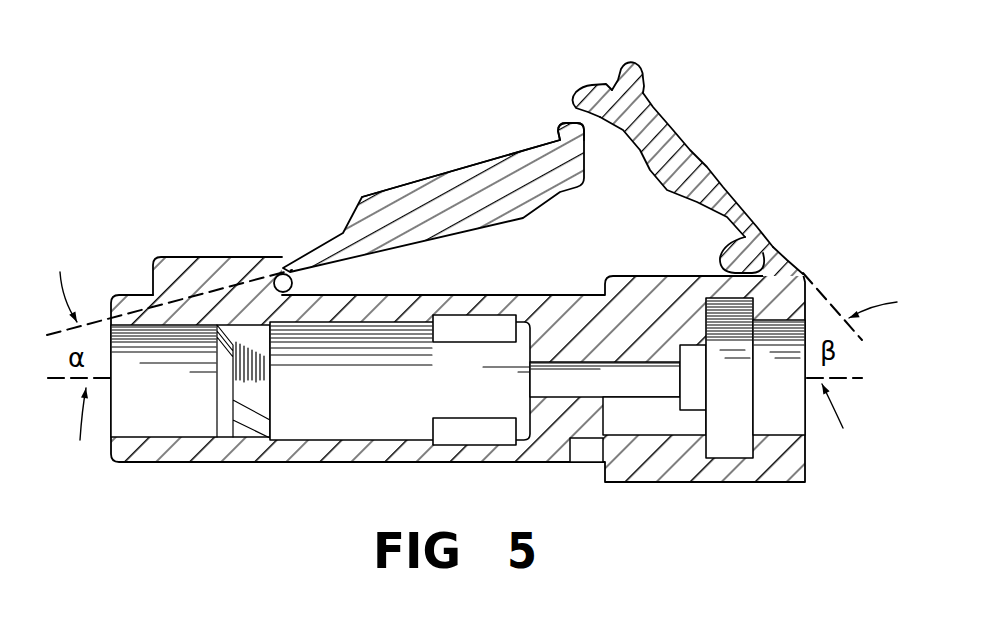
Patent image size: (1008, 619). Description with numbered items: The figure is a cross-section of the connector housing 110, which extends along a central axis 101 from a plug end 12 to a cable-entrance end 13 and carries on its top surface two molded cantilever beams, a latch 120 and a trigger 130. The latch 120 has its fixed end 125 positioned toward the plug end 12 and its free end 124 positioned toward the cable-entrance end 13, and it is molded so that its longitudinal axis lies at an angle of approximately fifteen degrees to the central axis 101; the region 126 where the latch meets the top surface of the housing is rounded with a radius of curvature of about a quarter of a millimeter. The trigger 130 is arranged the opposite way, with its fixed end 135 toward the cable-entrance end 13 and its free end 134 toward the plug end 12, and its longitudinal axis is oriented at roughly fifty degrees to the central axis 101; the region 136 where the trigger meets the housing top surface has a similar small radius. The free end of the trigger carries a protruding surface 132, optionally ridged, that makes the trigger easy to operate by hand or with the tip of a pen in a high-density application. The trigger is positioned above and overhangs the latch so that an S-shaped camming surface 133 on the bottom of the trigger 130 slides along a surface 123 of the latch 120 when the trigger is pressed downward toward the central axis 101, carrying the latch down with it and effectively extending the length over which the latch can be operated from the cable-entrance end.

The housing 110 is at (312, 130).
The plug end 12 is at (103, 448).
The cable-entrance end 13 is at (814, 447).
The central axis 101 is at (373, 383).
The latch 120 is at (425, 183).
The surface of the latch 123 is at (568, 122).
The free end of the latch 124 is at (528, 160).
The fixed end of the latch 125 is at (233, 262).
The region where the latch meets the top surface of the housing 126 is at (278, 272).
The trigger 130 is at (719, 147).
The protruding surface 132 is at (633, 67).
The camming surface 133 is at (604, 90).
The free end of the trigger 134 is at (668, 110).
The fixed end of the trigger 135 is at (785, 258).
The region where the trigger meets the top surface of the housing 136 is at (727, 250).